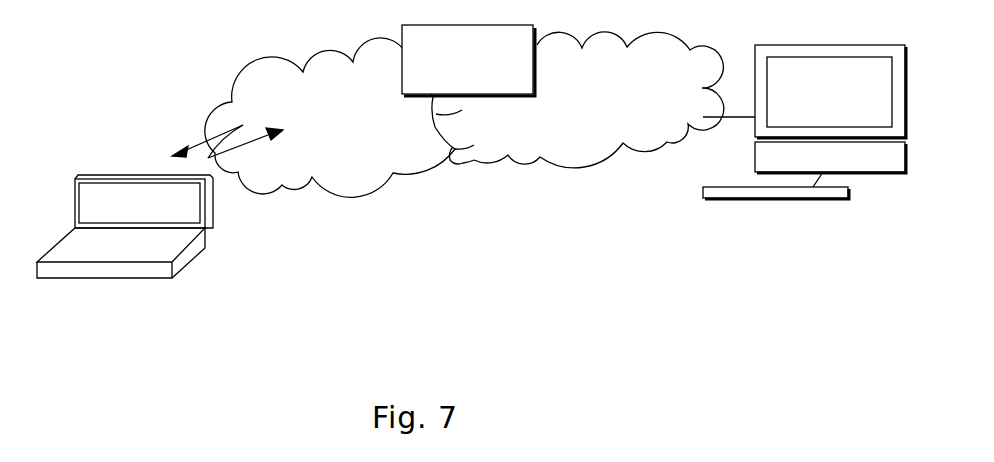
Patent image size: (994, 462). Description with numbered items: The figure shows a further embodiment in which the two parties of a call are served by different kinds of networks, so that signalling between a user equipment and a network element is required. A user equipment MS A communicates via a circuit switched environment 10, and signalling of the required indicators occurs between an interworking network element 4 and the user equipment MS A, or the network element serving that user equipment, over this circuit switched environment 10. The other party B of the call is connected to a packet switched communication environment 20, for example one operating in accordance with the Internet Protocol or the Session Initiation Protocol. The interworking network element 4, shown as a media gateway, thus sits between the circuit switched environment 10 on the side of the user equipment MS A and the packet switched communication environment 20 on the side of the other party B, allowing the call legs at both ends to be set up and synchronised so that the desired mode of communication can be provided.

The circuit switched environment 10 is at (327, 155).
The interworking network element 4 is at (472, 80).
The packet switched communication environment 20 is at (597, 167).
The other party B is at (780, 160).
The user equipment MS A is at (145, 247).